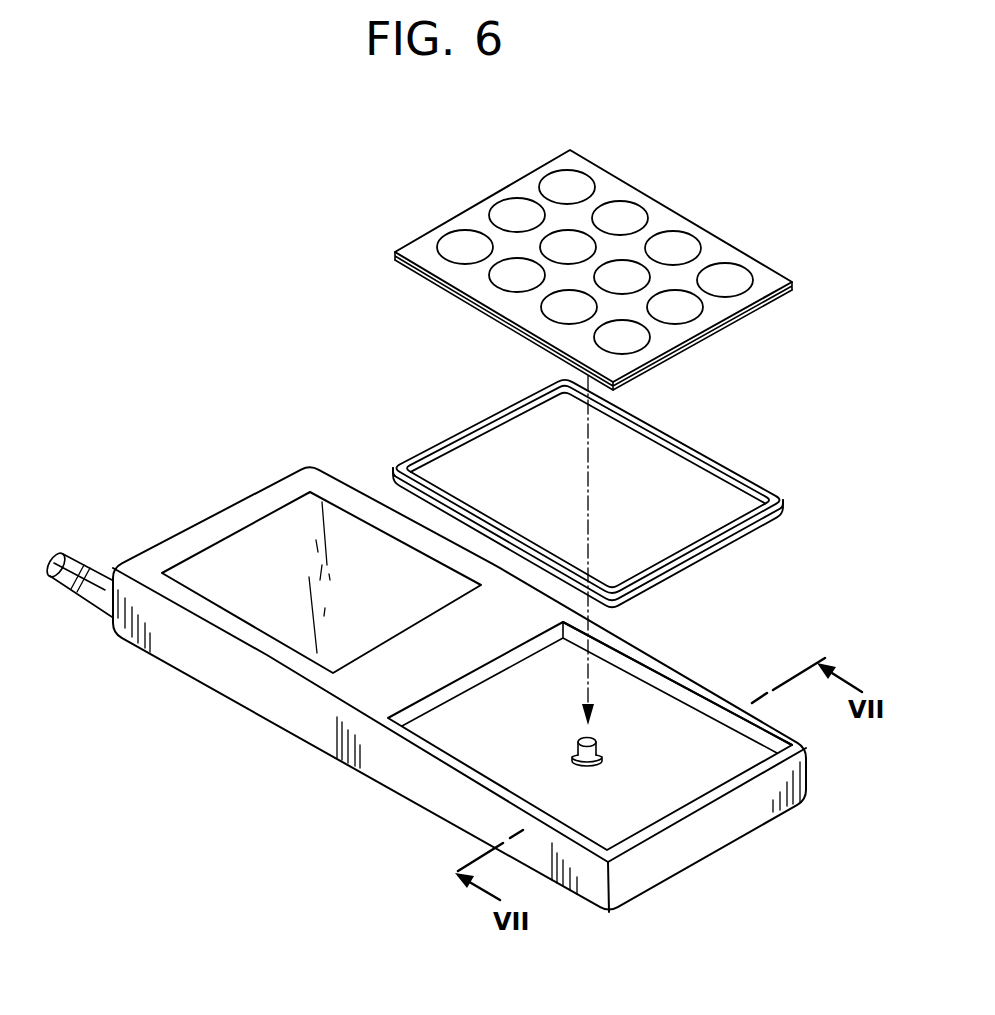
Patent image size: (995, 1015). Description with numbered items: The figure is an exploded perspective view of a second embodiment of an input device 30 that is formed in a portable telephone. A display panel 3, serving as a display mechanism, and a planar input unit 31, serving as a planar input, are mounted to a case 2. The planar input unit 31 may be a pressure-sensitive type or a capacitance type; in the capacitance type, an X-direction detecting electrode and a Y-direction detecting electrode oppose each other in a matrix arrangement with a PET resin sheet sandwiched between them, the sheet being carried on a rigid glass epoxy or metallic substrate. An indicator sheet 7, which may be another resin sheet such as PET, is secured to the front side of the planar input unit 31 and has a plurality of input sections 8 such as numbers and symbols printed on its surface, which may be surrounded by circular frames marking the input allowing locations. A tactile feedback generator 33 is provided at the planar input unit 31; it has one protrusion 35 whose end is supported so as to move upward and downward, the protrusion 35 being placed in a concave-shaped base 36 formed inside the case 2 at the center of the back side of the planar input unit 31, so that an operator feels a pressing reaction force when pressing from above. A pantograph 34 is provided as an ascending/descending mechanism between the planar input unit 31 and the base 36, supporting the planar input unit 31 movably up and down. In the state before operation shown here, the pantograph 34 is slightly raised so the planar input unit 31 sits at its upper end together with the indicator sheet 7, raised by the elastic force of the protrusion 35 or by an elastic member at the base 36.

The case 2 is at (223, 677).
The display panel 3 is at (293, 523).
The indicator sheet 7 is at (723, 303).
The input sections 8 is at (580, 171).
The input device 30 is at (286, 415).
The planar input unit 31 is at (652, 363).
The tactile feedback generator 33 is at (676, 768).
The pantograph 34 is at (757, 533).
The protrusion 35 is at (588, 738).
The concave-shaped base 36 is at (670, 712).